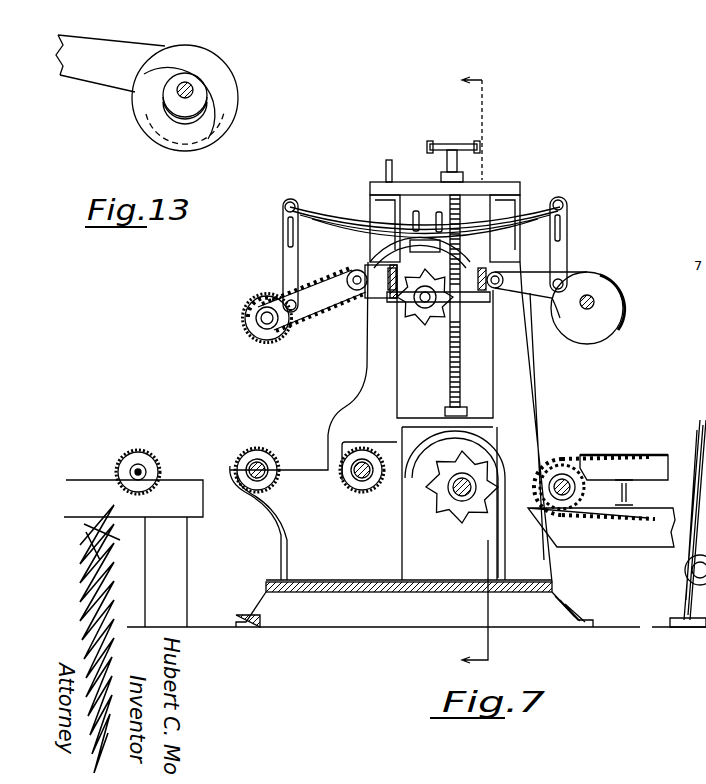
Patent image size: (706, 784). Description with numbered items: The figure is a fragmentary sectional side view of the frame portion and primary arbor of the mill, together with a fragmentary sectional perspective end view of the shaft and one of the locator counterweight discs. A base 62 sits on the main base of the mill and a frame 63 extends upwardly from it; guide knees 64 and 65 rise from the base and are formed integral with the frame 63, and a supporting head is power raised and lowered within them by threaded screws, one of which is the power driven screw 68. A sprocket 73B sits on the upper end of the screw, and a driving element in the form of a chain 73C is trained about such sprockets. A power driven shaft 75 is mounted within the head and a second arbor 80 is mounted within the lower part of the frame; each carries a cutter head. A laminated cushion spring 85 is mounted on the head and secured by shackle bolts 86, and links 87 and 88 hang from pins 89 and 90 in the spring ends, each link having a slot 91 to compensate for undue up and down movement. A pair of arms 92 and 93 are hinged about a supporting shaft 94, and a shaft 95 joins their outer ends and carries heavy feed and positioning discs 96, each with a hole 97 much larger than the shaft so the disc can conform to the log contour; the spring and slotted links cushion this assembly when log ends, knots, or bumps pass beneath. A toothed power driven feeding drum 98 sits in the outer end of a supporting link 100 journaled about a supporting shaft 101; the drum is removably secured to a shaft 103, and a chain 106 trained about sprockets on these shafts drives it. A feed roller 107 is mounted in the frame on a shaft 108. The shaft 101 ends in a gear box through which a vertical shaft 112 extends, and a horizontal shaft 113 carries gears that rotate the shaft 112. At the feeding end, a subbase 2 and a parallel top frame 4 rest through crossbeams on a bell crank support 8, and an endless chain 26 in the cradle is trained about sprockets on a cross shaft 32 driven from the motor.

In FIG. 7, the subbase 2 is at (612, 532).
In FIG. 7, the top frame 4 is at (608, 462).
In FIG. 7, the bell crank support 8 is at (482, 371).
In FIG. 7, the endless chain 26 is at (655, 455).
In FIG. 7, the cross shaft 32 is at (570, 470).
In FIG. 7, the base 62 is at (357, 603).
In FIG. 7, the frame 63 is at (520, 395).
In FIG. 7, the guide knee 64 is at (508, 205).
In FIG. 7, the guide knee 65 is at (378, 206).
In FIG. 7, the power driven screw 68 is at (460, 212).
In FIG. 7, the sprocket 73B is at (452, 143).
In FIG. 7, the chain 73C is at (480, 144).
In FIG. 7, the power driven shaft 75 is at (430, 330).
In FIG. 7, the second arbor 80 is at (454, 492).
In FIG. 7, the cushion spring 85 is at (500, 228).
In FIG. 7, the shackle bolt 86 is at (414, 212).
In FIG. 7, the link 87 is at (300, 262).
In FIG. 7, the link 88 is at (566, 254).
In FIG. 7, the pin 89 is at (294, 206).
In FIG. 7, the pin 90 is at (563, 206).
In FIG. 7, the slot 91 is at (298, 228).
In FIG. 13, the arm 92 is at (98, 48).
In FIG. 7, the arm 93 is at (578, 282).
In FIG. 7, the supporting shaft 94 is at (498, 277).
In FIG. 13, the shaft 95 is at (180, 98).
In FIG. 7, the shaft 95 is at (595, 300).
In FIG. 13, the feed and positioning disc 96 is at (228, 82).
In FIG. 7, the feed and positioning disc 96 is at (619, 326).
In FIG. 13, the hole 97 is at (185, 118).
In FIG. 7, the power driven feeding drum 98 is at (270, 340).
In FIG. 7, the supporting link 100 is at (328, 310).
In FIG. 7, the supporting shaft 101 is at (358, 269).
In FIG. 7, the shaft 103 is at (258, 324).
In FIG. 7, the chain 106 is at (353, 320).
In FIG. 7, the feed roller 107 is at (268, 448).
In FIG. 7, the shaft 108 is at (266, 460).
In FIG. 7, the shaft 112 is at (389, 160).
In FIG. 7, the shaft 113 is at (352, 488).